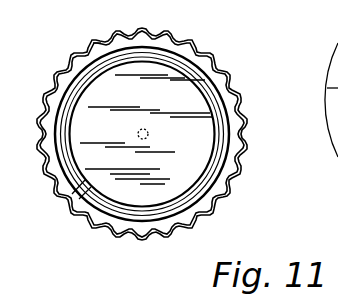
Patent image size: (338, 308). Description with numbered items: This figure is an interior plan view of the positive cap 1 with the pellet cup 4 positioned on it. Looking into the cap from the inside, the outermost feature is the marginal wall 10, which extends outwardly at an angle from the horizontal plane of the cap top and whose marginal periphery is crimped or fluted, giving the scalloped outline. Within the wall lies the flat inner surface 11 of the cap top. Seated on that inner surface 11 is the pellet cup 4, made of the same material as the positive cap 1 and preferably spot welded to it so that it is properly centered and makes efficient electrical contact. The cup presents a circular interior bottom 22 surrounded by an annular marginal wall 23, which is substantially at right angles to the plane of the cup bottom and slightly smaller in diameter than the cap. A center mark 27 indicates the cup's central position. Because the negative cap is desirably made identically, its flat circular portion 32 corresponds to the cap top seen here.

The positive cap 1 is at (220, 63).
The pellet cup 4 is at (225, 130).
The marginal wall 10 is at (59, 86).
The inner surface 11 is at (50, 138).
The circular interior bottom 22 is at (115, 177).
The annular marginal wall 23 is at (77, 190).
The central aperture 27 is at (149, 136).
The flat circular portion 32 is at (97, 43).